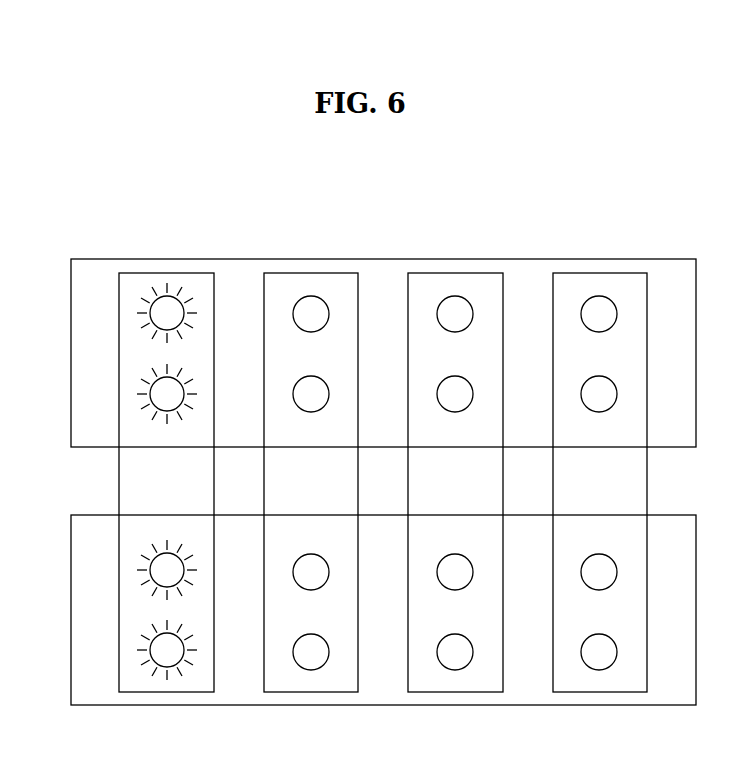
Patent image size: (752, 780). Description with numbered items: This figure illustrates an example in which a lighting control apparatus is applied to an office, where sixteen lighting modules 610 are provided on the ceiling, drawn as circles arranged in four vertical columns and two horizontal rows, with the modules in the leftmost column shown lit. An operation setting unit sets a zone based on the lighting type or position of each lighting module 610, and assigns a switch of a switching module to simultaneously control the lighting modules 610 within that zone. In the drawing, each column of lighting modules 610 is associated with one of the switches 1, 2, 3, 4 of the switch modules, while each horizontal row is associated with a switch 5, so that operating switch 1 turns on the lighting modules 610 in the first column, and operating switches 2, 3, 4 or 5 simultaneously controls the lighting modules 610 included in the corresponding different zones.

The lighting module 610 is at (175, 294).
The switch 1 is at (166, 512).
The switch 2 is at (311, 512).
The switch 3 is at (455, 512).
The switch 4 is at (600, 512).
The switch 5 is at (359, 482).